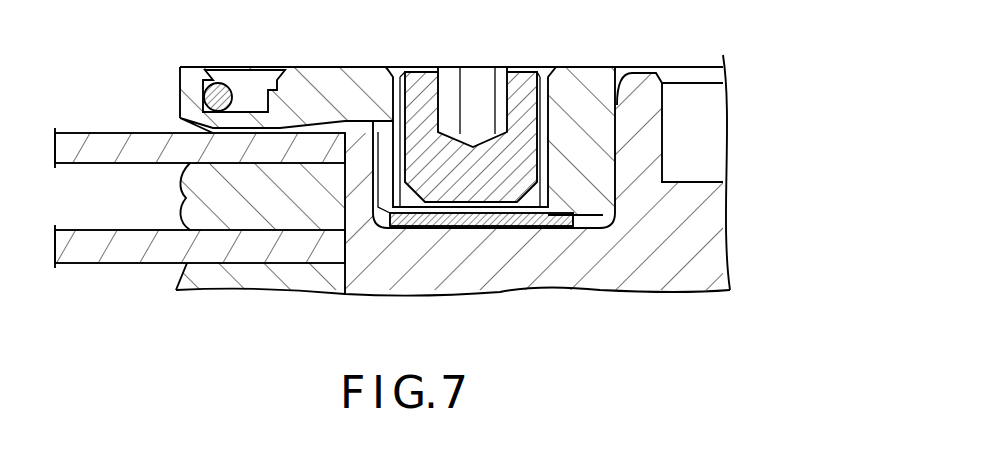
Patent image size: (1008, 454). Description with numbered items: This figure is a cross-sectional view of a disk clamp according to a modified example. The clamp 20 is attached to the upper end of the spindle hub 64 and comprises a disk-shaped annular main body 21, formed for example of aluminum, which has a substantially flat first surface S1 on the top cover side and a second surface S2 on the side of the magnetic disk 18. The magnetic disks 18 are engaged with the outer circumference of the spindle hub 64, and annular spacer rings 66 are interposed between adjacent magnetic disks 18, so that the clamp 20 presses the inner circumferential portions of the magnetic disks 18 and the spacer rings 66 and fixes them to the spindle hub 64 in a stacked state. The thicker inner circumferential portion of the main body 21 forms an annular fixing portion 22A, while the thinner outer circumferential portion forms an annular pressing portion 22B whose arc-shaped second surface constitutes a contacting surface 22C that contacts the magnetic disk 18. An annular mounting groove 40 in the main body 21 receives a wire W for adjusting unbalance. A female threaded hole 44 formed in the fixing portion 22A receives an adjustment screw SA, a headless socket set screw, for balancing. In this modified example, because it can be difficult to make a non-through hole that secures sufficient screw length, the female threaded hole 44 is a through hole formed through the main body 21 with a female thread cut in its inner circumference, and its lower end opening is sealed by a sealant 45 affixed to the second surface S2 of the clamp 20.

The wire W is at (214, 86).
The mounting groove 40 is at (268, 96).
The pressing portion 22B is at (305, 90).
The clamp 20 is at (343, 69).
The main body 21 is at (363, 80).
The female threaded hole 44 is at (418, 72).
The adjustment screw SA is at (520, 72).
The first surface S1 is at (570, 68).
The contacting surface 22C is at (220, 130).
The magnetic disk 18 is at (60, 147).
The spacer ring 66 is at (193, 200).
The fixing portion 22A is at (582, 192).
The sealant 45 is at (487, 226).
The second surface S2 is at (587, 290).
The spindle hub 64 is at (662, 275).